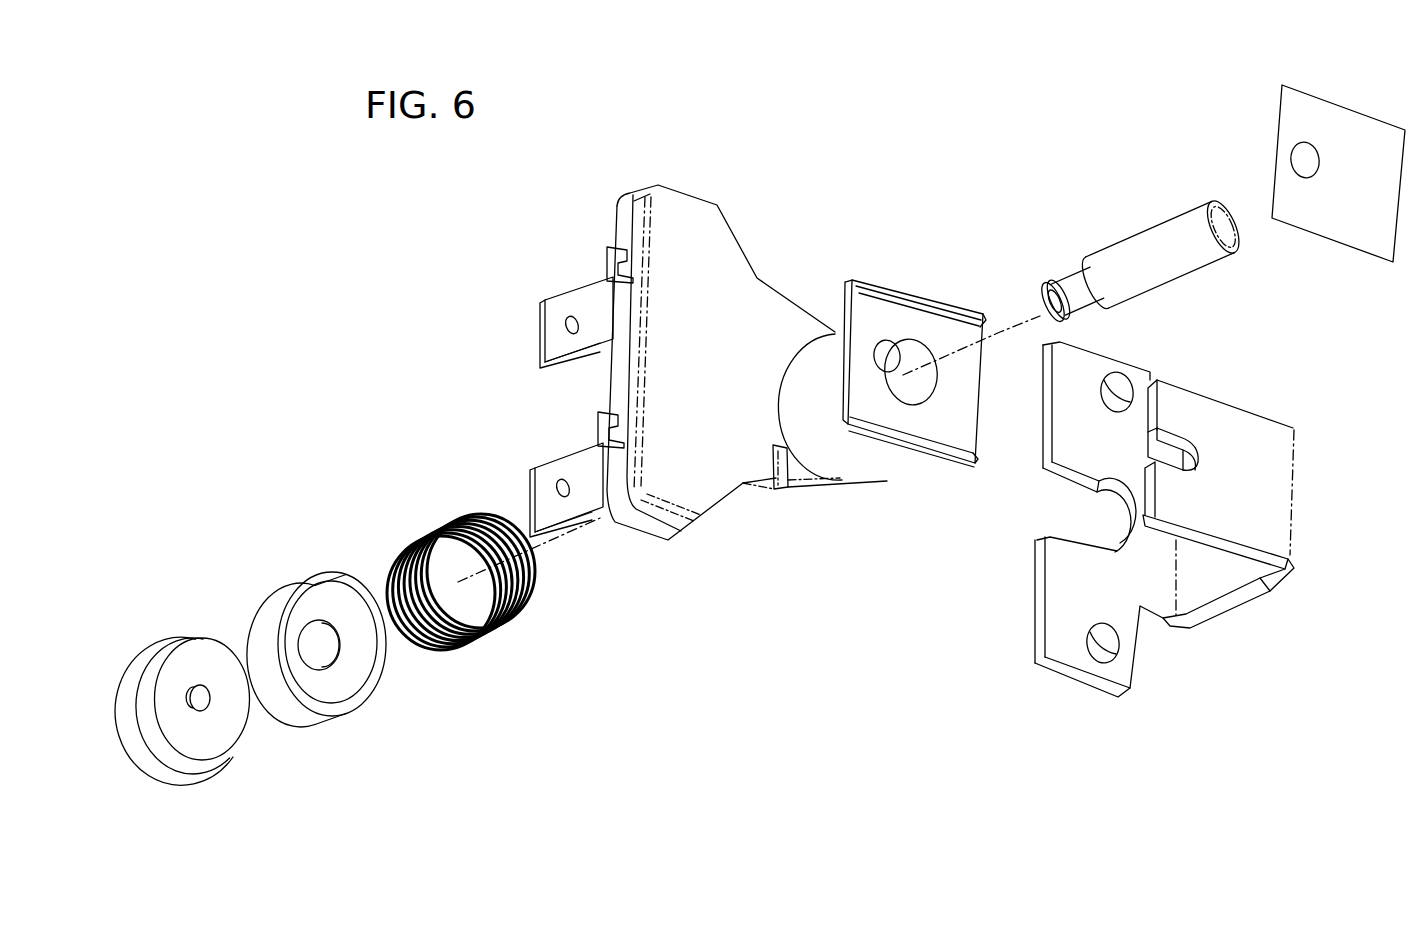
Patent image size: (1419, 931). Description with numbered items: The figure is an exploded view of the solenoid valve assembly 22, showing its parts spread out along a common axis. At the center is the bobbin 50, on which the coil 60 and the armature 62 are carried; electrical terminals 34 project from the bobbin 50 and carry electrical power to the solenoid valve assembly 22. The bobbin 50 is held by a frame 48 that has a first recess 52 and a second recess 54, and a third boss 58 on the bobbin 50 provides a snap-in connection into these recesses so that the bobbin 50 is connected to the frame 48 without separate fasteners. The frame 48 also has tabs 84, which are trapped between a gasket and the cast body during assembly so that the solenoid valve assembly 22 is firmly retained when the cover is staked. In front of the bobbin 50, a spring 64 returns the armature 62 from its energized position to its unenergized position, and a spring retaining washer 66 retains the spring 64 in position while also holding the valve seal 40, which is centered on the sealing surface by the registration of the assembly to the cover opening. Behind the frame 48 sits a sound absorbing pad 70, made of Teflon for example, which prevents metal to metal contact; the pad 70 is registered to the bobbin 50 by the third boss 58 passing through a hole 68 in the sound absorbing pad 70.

The solenoid valve assembly 22 is at (906, 118).
The electrical terminals 34 is at (565, 303).
The valve seal 40 is at (160, 646).
The frame 48 is at (1127, 542).
The bobbin 50 is at (742, 367).
The first recess 52 is at (1070, 518).
The second recess 54 is at (1200, 445).
The third boss 58 is at (887, 348).
The coil 60 is at (838, 466).
The armature 62 is at (1156, 240).
The spring 64 is at (426, 533).
The spring retaining washer 66 is at (273, 596).
The hole 68 is at (1300, 152).
The sound absorbing pad 70 is at (1317, 163).
The tabs 84 is at (1066, 655).